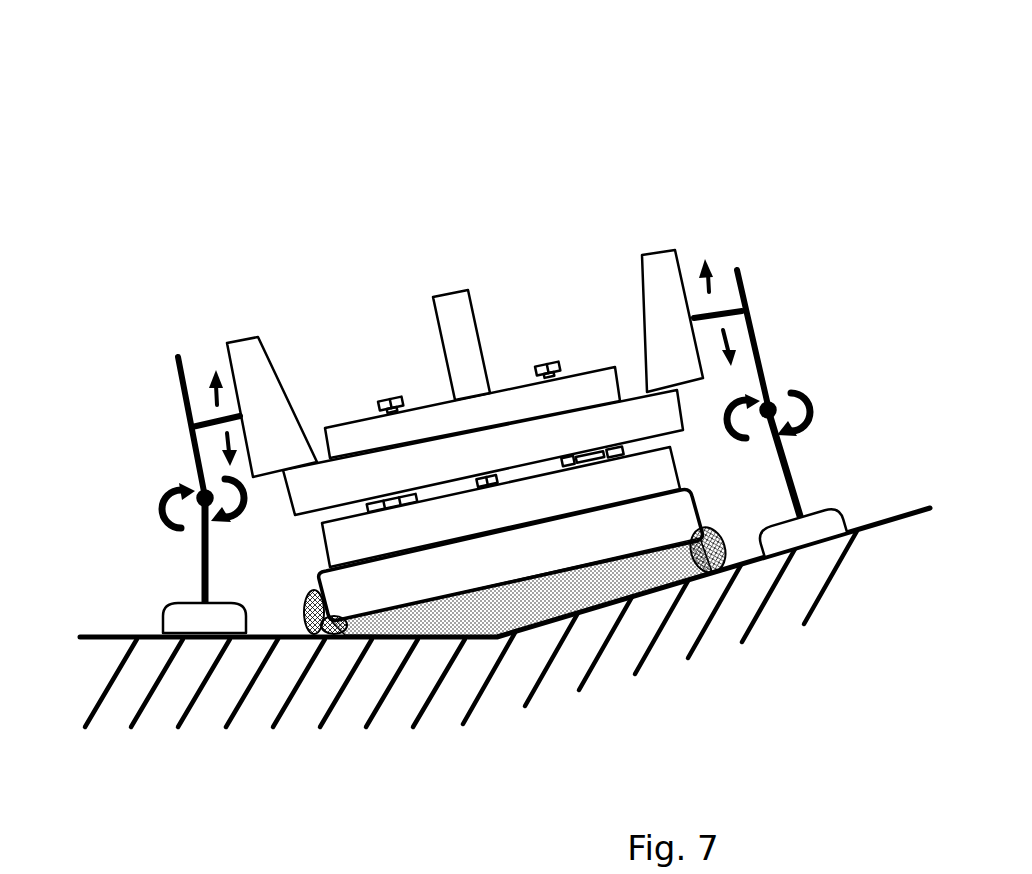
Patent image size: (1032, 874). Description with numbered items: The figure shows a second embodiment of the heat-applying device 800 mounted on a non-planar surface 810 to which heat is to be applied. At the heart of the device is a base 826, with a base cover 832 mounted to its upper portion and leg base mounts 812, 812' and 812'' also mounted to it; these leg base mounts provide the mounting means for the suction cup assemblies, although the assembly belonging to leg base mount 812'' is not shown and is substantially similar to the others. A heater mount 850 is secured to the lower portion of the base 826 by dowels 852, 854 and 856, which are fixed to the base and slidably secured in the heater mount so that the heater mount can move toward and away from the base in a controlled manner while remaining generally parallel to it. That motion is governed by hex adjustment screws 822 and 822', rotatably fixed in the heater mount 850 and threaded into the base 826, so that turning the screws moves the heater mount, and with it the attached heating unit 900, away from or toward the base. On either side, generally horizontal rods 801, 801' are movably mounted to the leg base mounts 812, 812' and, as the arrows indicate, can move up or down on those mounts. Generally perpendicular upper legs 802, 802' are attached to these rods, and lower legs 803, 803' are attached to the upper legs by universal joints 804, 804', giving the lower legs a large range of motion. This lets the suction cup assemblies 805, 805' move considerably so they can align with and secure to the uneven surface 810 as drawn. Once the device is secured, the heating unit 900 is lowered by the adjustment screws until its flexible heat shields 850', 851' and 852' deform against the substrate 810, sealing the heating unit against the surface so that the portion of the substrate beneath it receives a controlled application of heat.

The device 800 is at (294, 104).
The horizontal rod 801 is at (151, 363).
The upper leg 802 is at (136, 388).
The lower leg 803 is at (127, 549).
The universal joint 804 is at (143, 469).
The suction cup assembly 805 is at (129, 593).
The horizontal rod 801' is at (751, 247).
The upper leg 802' is at (789, 306).
The lower leg 803' is at (848, 442).
The universal joint 804' is at (820, 371).
The suction cup assembly 805' is at (847, 496).
The non-planar surface 810 is at (133, 693).
The leg base mount 812 is at (219, 318).
The leg base mount 812' is at (691, 217).
The leg base mount 812'' is at (437, 258).
The hex adjustment screw 822 is at (364, 330).
The hex adjustment screw 822' is at (561, 291).
The base 826 is at (257, 336).
The base cover 832 is at (585, 373).
The heater mount 850 is at (252, 702).
The flexible heat shield 850' is at (348, 690).
The flexible heat shield 851' is at (679, 656).
The dowel 852 is at (478, 354).
The flexible heat shield 852' is at (522, 675).
The dowel 854 is at (487, 477).
The dowel 856 is at (614, 450).
The heating unit 900 is at (683, 508).